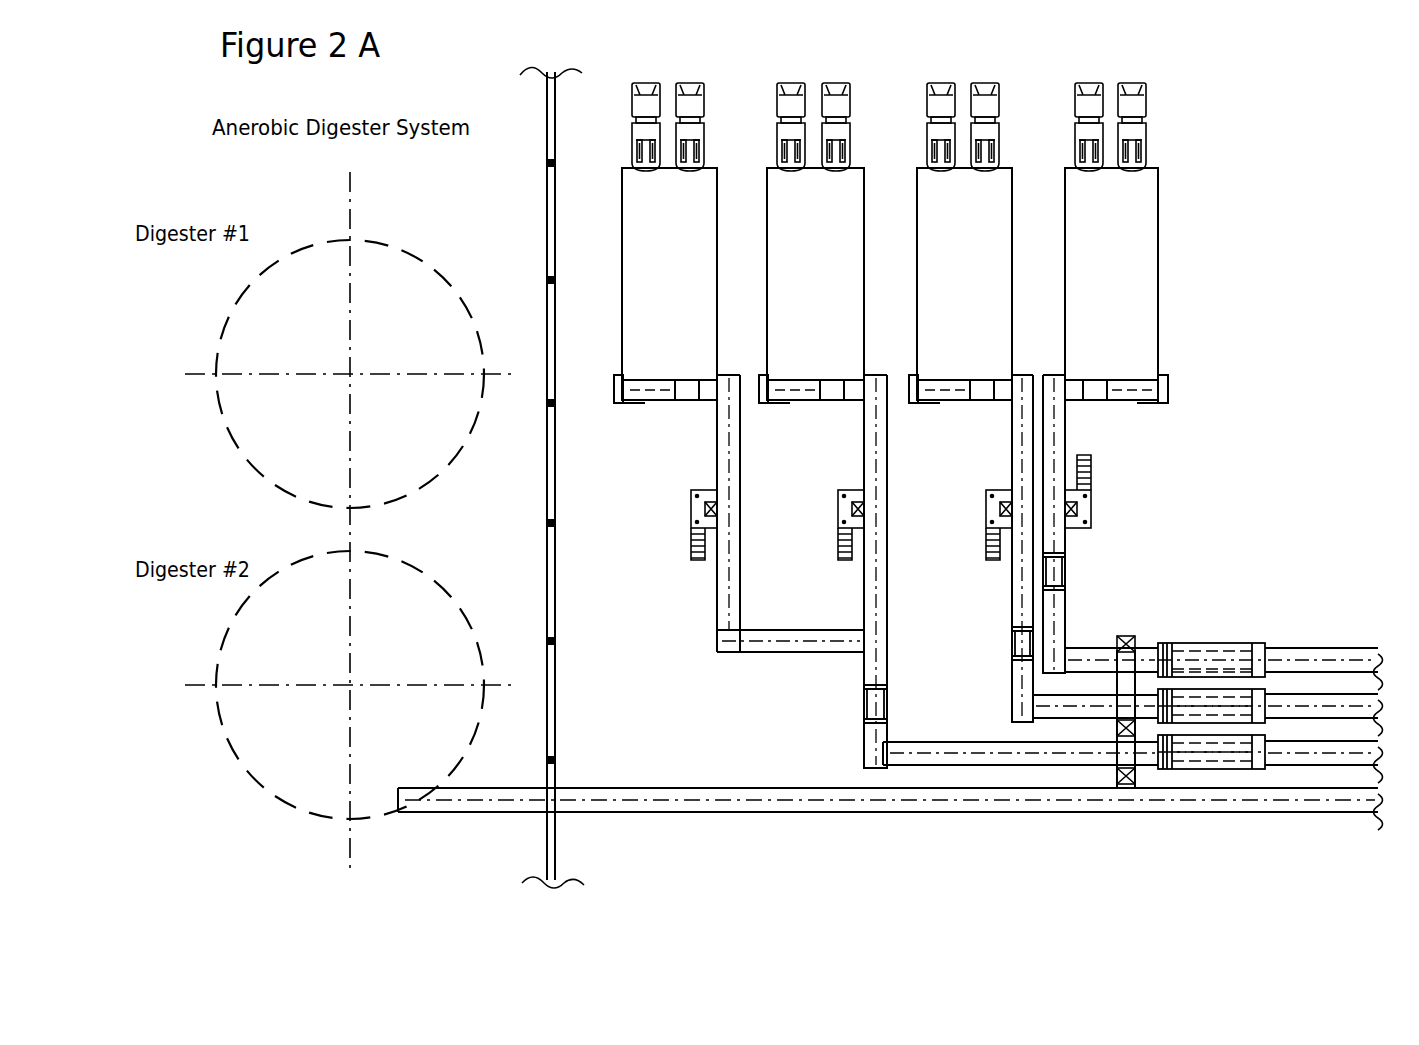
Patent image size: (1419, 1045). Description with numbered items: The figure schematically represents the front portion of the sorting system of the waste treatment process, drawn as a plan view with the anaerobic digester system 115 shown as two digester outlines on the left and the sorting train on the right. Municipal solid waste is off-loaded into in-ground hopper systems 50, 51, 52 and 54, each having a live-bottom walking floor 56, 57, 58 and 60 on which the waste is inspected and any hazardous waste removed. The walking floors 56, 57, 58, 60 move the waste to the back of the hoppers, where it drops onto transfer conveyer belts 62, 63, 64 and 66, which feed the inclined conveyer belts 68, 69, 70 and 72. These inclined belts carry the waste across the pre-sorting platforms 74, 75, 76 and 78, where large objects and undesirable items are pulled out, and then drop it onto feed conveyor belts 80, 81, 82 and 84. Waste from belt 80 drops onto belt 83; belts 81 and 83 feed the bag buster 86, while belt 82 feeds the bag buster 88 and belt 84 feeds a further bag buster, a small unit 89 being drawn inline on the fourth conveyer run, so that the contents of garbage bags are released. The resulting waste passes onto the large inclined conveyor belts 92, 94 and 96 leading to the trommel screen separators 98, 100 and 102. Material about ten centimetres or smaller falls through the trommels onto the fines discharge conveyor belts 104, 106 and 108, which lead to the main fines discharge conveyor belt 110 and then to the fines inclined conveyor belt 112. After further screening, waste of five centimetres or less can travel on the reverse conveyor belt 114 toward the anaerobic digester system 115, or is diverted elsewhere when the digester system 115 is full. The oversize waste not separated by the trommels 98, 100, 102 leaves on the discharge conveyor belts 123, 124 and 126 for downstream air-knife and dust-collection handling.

The in-ground hopper system 50 is at (638, 215).
The in-ground hopper system 51 is at (798, 195).
The in-ground hopper system 52 is at (945, 195).
The in-ground hopper system 54 is at (1085, 208).
The live-bottom walking floor 56 is at (657, 345).
The live-bottom walking floor 57 is at (800, 350).
The live-bottom walking floor 58 is at (945, 350).
The live-bottom walking floor 60 is at (1085, 345).
The transfer conveyer belt 62 is at (667, 396).
The transfer conveyer belt 63 is at (805, 396).
The transfer conveyer belt 64 is at (957, 396).
The transfer conveyer belt 66 is at (1125, 398).
The inclined conveyer belt 68 is at (728, 438).
The inclined conveyer belt 69 is at (876, 437).
The inclined conveyer belt 70 is at (1020, 452).
The inclined conveyer belt 72 is at (1065, 432).
The pre-sorting platform 74 is at (691, 505).
The pre-sorting platform 75 is at (838, 510).
The pre-sorting platform 76 is at (986, 508).
The pre-sorting platform 78 is at (1088, 508).
The feed conveyor belt 80 is at (717, 598).
The feed conveyor belt 81 is at (863, 593).
The feed conveyor belt 82 is at (1012, 593).
The conveyor belt 83 is at (740, 652).
The feed conveyor belt 84 is at (1068, 540).
The bag buster 86 is at (865, 698).
The bag buster 88 is at (1012, 645).
The valve 89 is at (1065, 572).
The large inclined conveyor belt 92 is at (920, 767).
The large inclined conveyor belt 94 is at (1058, 713).
The large inclined conveyor belt 96 is at (1093, 650).
The trommel screen separator 98 is at (1224, 752).
The trommel screen separator 100 is at (1203, 707).
The trommel screen separator 102 is at (1186, 672).
The fines discharge conveyor belt 104 is at (1195, 740).
The fines discharge conveyor belt 106 is at (1203, 703).
The fines discharge conveyor belt 108 is at (1235, 650).
The main fines discharge conveyor belt 110 is at (1120, 790).
The fines inclined conveyor belt 112 is at (1270, 800).
The reverse conveyor belt 114 is at (882, 810).
The anaerobic digester system 115 is at (418, 645).
The discharge conveyor belt 123 is at (1280, 755).
The discharge conveyor belt 124 is at (1280, 708).
The discharge conveyor belt 126 is at (1290, 655).